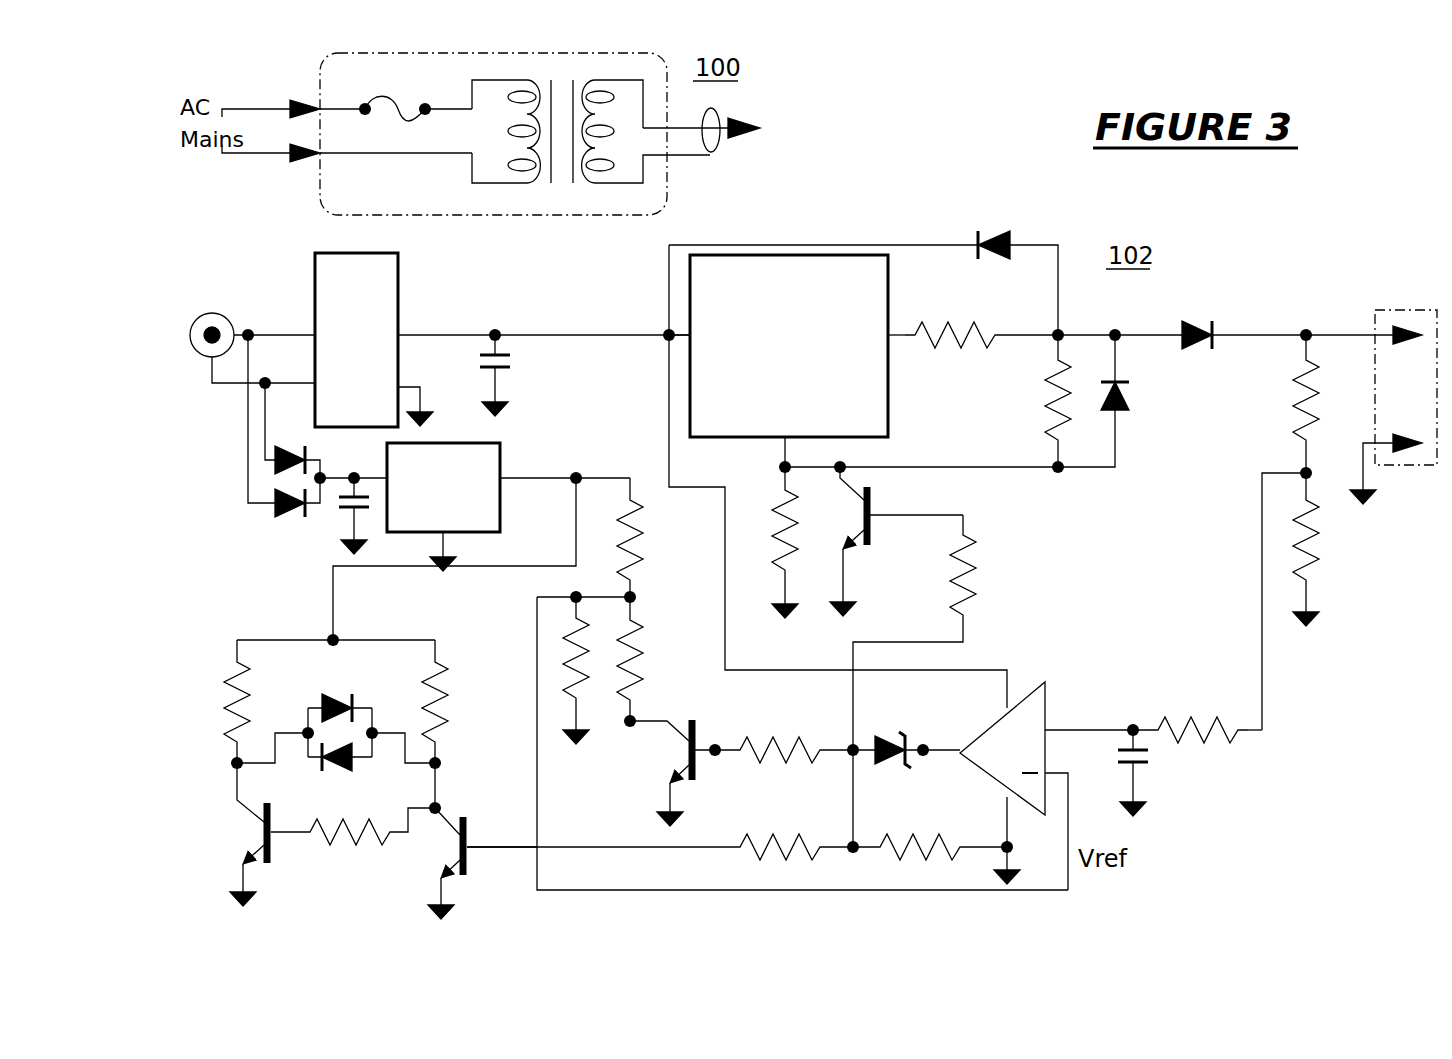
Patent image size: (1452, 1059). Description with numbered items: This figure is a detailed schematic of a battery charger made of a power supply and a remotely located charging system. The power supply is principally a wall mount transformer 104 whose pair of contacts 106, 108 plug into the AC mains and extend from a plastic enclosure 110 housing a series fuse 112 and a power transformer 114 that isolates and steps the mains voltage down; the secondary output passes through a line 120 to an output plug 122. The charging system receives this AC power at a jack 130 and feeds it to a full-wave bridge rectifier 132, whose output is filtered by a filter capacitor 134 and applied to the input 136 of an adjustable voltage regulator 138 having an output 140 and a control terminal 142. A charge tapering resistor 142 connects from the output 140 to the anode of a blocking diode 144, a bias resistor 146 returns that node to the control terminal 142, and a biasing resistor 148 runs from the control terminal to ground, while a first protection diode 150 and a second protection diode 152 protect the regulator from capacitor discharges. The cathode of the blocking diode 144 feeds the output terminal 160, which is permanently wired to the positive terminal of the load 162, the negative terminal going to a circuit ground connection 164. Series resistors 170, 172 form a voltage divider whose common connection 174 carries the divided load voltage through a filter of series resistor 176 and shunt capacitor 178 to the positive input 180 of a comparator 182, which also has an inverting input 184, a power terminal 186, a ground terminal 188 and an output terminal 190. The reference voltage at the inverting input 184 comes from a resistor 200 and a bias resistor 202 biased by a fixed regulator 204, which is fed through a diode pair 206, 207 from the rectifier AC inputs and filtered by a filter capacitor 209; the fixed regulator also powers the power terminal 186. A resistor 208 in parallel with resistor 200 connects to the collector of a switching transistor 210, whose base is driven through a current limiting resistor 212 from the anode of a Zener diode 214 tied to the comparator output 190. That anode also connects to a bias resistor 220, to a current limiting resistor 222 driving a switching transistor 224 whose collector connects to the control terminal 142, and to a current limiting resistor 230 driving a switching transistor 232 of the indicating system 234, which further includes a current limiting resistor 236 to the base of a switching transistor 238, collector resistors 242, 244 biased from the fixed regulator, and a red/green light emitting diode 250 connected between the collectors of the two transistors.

The wall mount transformer 104 is at (318, 207).
The contact 106 is at (318, 108).
The contact 108 is at (318, 154).
The plastic enclosure 110 is at (450, 216).
The series fuse 112 is at (383, 101).
The power transformer 114 is at (560, 184).
The line 120 is at (686, 156).
The output plug 122 is at (714, 110).
The jack 130 is at (212, 313).
The full-wave bridge rectifier 132 is at (398, 272).
The filter capacitor 134 is at (498, 366).
The input 136 is at (668, 333).
The adjustable voltage regulator 138 is at (888, 278).
The output 140 is at (888, 350).
The control terminal 142 is at (978, 328).
The blocking diode 144 is at (1196, 318).
The bias resistor 146 is at (1050, 415).
The biasing resistor 148 is at (785, 514).
The first protection diode 150 is at (1125, 398).
The second protection diode 152 is at (1004, 232).
The output terminal 160 is at (1306, 333).
The load 162 is at (1400, 306).
The circuit ground connection 164 is at (1365, 470).
The resistor 170 is at (1300, 378).
The resistor 172 is at (1315, 535).
The common connection 174 is at (1300, 472).
The series resistor 176 is at (1172, 726).
The shunt capacitor 178 is at (1165, 762).
The positive input 180 is at (1050, 728).
The comparator 182 is at (1046, 686).
The inverting input 184 is at (1048, 772).
The power terminal 186 is at (1008, 700).
The ground terminal 188 is at (1009, 797).
The output terminal 190 is at (960, 756).
The resistor 200 is at (582, 690).
The bias resistor 202 is at (640, 522).
The fixed regulator 204 is at (500, 447).
The diode 206 is at (275, 512).
The diode 207 is at (285, 447).
The resistor 208 is at (638, 650).
The filter capacitor 209 is at (340, 513).
The switching transistor 210 is at (705, 722).
The current limiting resistor 212 is at (775, 740).
The Zener diode 214 is at (882, 735).
The bias resistor 220 is at (922, 840).
The current limiting resistor 222 is at (975, 565).
The switching transistor 224 is at (872, 500).
The current limiting resistor 230 is at (784, 840).
The switching transistor 232 is at (456, 846).
The indicating system 234 is at (244, 636).
The current limiting resistor 236 is at (356, 836).
The switching transistor 238 is at (250, 822).
The collector resistor 242 is at (440, 700).
The collector resistor 244 is at (232, 705).
The red/green light emitting diode 250 is at (340, 700).